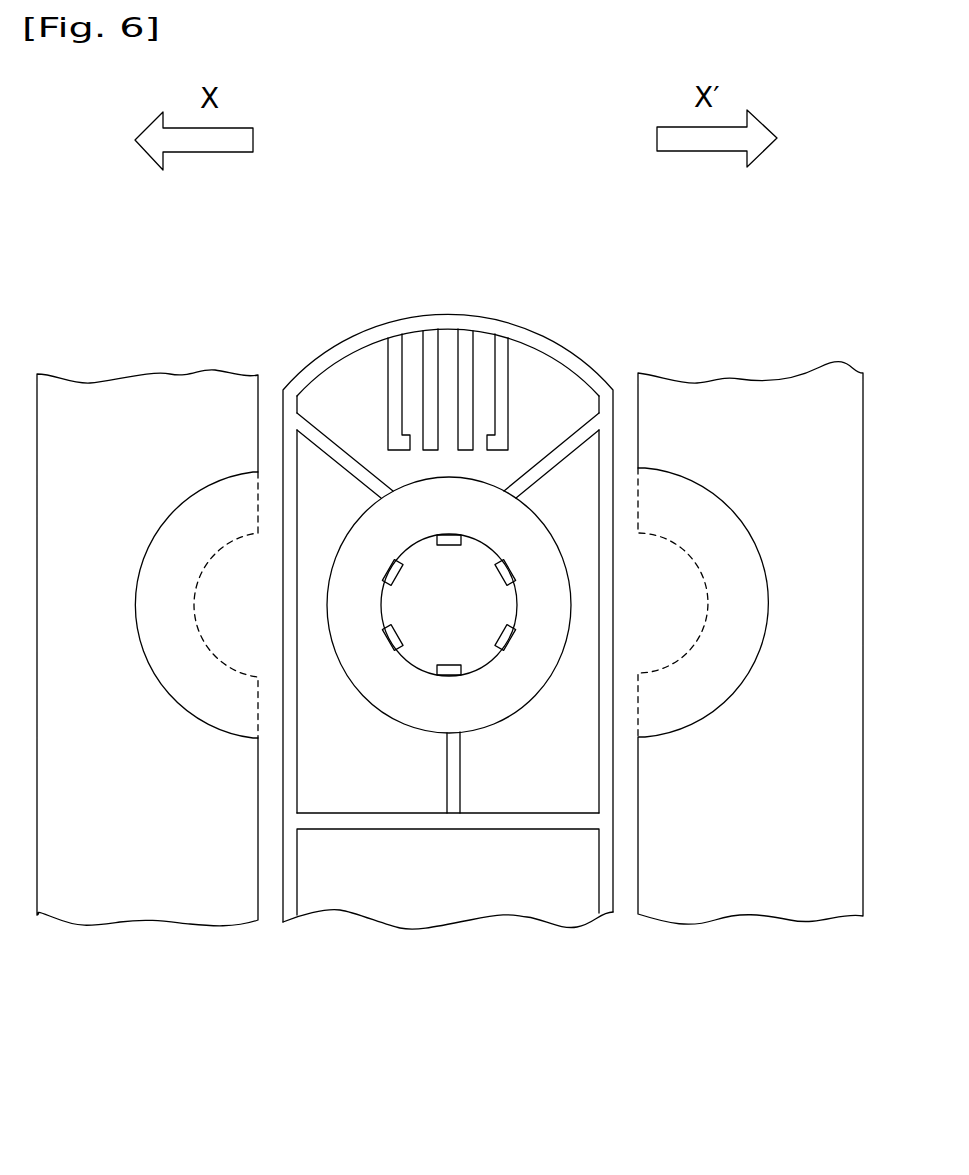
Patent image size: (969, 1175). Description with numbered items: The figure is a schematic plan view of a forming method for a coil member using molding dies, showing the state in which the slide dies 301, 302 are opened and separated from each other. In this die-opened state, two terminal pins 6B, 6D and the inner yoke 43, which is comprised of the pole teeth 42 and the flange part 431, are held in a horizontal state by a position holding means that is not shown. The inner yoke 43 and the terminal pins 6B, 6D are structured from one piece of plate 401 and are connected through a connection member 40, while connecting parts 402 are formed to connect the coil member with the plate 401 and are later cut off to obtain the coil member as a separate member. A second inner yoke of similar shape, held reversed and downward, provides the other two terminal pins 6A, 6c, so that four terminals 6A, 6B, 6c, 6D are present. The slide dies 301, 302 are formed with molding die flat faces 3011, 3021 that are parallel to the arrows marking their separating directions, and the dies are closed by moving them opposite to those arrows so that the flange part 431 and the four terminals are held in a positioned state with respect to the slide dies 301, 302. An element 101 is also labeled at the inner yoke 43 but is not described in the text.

The connection member 40 is at (501, 355).
The plate 401 is at (476, 326).
The connecting parts 402 is at (378, 480).
The terminal pin 6A is at (428, 353).
The terminal pin 6B is at (390, 362).
The terminal pin 6c is at (463, 350).
The terminal pin 6D is at (527, 376).
The inner yoke 43 is at (324, 668).
The flange part 431 is at (502, 698).
The projection 101 is at (450, 535).
The pole teeth 42 is at (392, 641).
The slide die 301 is at (80, 417).
The molding die flat face 3011 is at (257, 532).
The slide die 302 is at (788, 398).
The molding die flat face 3021 is at (640, 533).